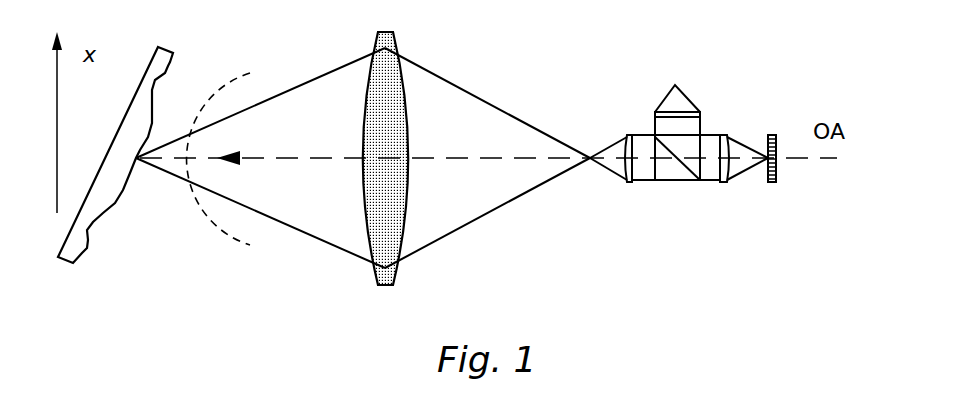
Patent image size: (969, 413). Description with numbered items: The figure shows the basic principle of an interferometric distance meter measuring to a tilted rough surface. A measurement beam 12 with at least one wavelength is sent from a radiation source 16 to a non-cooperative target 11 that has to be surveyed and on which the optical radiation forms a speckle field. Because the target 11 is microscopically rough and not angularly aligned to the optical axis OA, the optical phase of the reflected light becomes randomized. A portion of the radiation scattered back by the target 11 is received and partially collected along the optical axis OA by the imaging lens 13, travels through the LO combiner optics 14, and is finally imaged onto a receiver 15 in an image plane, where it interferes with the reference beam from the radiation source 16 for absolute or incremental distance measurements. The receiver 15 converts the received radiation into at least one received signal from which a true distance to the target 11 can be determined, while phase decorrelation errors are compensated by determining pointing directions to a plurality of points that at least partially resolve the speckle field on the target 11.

The non-cooperative target 11 is at (93, 212).
The measurement beam 12 is at (250, 75).
The imaging lens 13 is at (388, 78).
The LO combiner optics 14 is at (677, 170).
The receiver 15 is at (772, 180).
The radiation source 16 is at (678, 102).